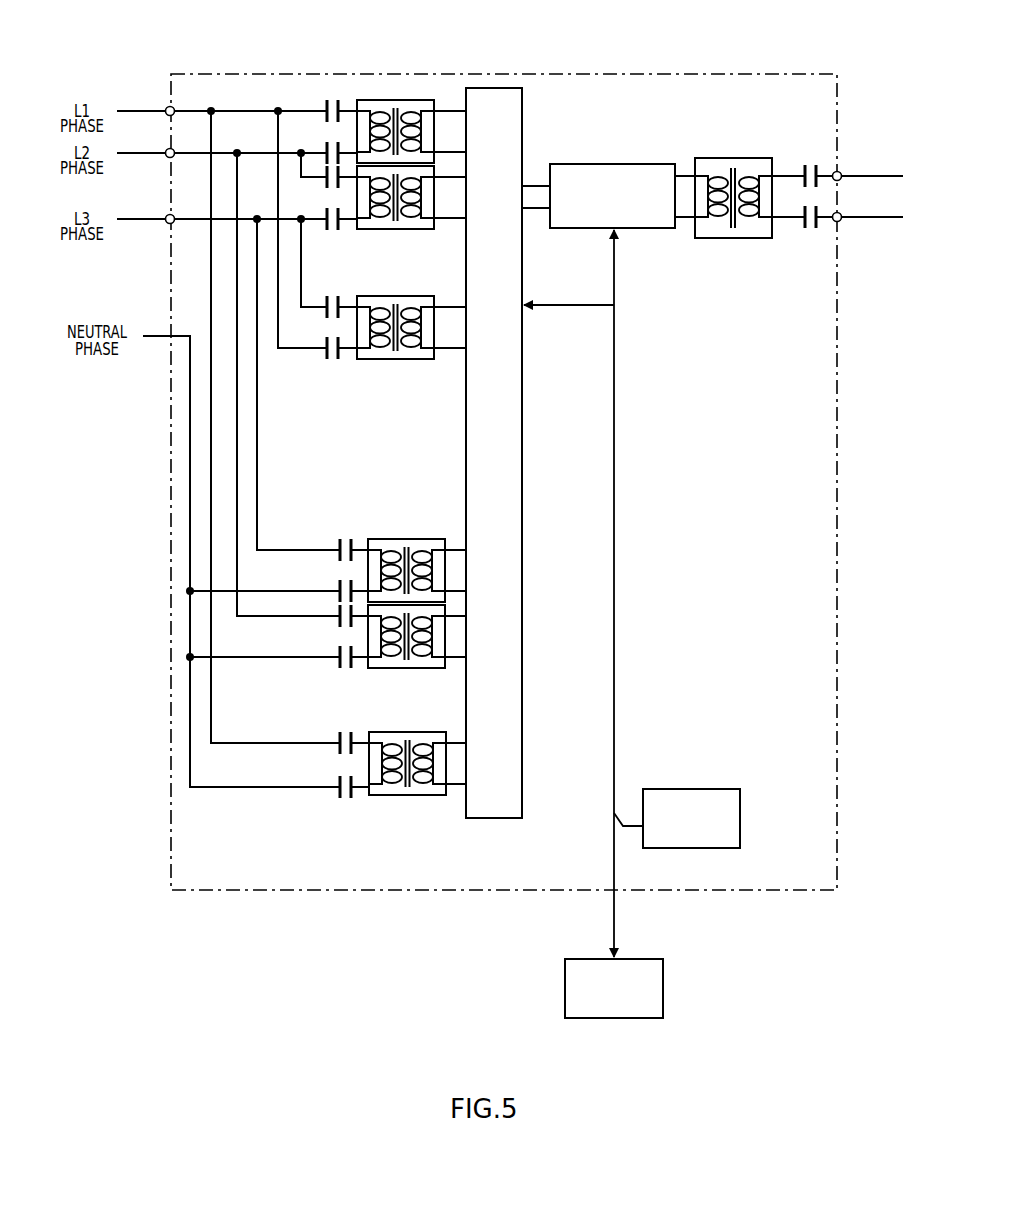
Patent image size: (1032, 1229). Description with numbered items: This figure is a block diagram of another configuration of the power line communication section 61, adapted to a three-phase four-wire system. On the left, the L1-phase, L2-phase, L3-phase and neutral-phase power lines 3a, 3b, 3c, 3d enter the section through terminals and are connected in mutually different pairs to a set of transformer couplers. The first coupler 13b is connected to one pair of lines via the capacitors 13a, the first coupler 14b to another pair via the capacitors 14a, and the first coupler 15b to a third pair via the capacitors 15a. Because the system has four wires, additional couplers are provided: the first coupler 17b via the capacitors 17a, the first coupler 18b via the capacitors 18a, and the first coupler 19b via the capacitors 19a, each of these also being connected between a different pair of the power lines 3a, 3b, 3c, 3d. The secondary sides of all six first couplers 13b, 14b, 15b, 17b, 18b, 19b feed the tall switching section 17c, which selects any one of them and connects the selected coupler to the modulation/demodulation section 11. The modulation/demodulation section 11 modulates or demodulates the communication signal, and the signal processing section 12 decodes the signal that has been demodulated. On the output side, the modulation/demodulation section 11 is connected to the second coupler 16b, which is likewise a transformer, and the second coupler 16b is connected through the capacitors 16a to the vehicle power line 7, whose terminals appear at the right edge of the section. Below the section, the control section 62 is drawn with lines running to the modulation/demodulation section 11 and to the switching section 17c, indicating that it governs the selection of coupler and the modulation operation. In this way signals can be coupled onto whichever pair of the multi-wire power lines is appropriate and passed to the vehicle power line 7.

The power line 3a is at (147, 108).
The power line 3b is at (157, 158).
The power line 3c is at (157, 223).
The power line 3d is at (157, 338).
The vehicle power line 7 is at (862, 218).
The modulation/demodulation section 11 is at (617, 163).
The signal processing section 12 is at (742, 828).
The capacitors 13a is at (327, 147).
The first coupler 13b is at (392, 98).
The capacitors 14a is at (338, 192).
The first coupler 14b is at (391, 230).
The capacitors 15a is at (330, 354).
The first coupler 15b is at (402, 360).
The capacitors 16a is at (813, 223).
The second coupler 16b is at (723, 158).
The capacitors 17a is at (350, 585).
The first coupler 17b is at (403, 538).
The switching section 17c is at (525, 540).
The capacitors 18a is at (347, 650).
The first coupler 18b is at (402, 668).
The capacitors 19a is at (342, 782).
The first coupler 19b is at (413, 798).
The power line communication section 61 is at (556, 73).
The control section 62 is at (665, 985).